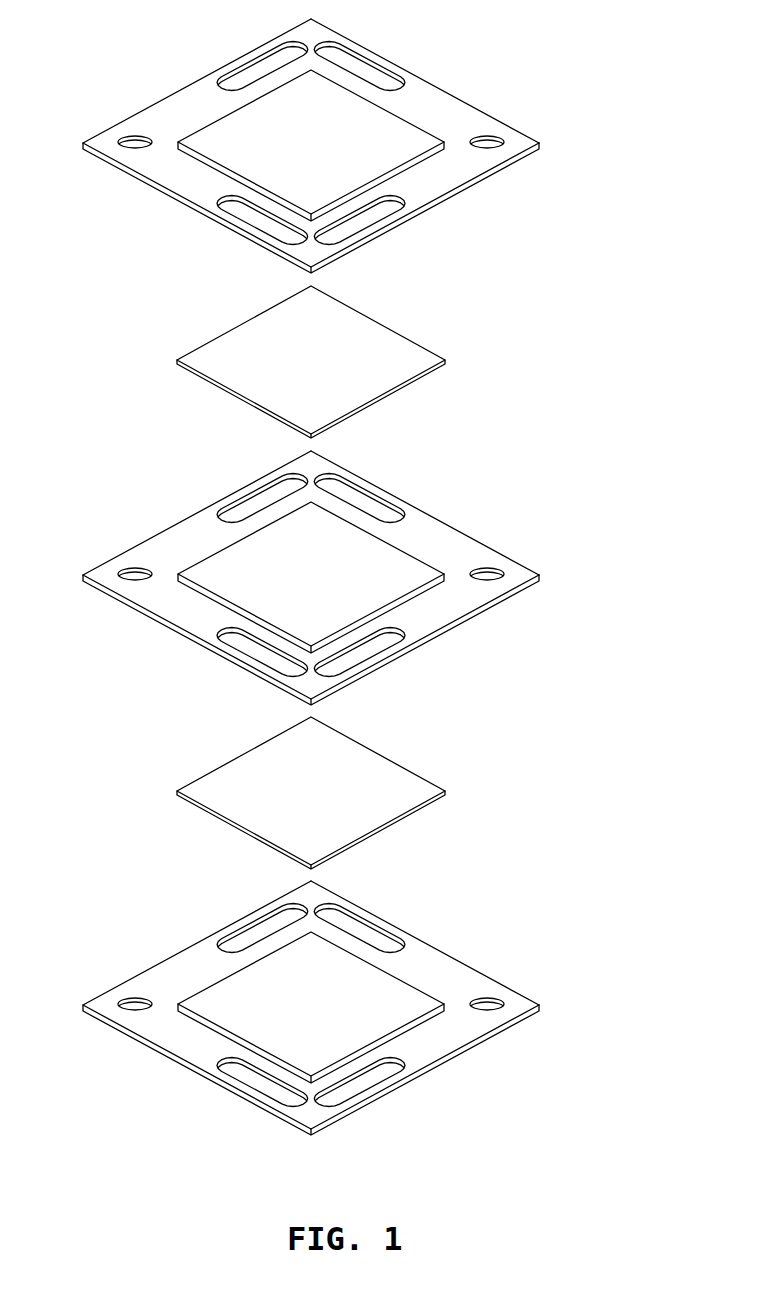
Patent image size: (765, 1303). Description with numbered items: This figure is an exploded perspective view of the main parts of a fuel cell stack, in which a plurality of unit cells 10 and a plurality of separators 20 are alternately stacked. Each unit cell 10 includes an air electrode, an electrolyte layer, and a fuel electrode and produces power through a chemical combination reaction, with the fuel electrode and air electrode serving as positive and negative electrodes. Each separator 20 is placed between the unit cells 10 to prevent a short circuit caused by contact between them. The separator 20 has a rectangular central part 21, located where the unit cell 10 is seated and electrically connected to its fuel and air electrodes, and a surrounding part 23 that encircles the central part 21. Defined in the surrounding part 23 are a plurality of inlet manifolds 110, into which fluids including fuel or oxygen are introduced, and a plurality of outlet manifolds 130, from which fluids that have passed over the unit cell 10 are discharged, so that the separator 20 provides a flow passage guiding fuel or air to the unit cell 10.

The unit cell 10 is at (331, 577).
The separator 20 is at (347, 577).
The central part 21 is at (334, 581).
The surrounding part 23 is at (425, 512).
The inlet manifold 110 is at (328, 591).
The outlet manifold 130 is at (335, 605).